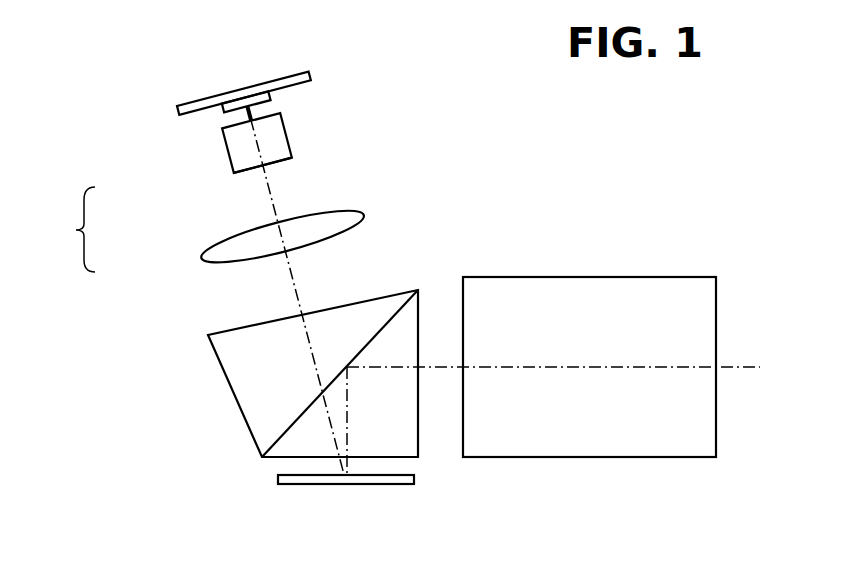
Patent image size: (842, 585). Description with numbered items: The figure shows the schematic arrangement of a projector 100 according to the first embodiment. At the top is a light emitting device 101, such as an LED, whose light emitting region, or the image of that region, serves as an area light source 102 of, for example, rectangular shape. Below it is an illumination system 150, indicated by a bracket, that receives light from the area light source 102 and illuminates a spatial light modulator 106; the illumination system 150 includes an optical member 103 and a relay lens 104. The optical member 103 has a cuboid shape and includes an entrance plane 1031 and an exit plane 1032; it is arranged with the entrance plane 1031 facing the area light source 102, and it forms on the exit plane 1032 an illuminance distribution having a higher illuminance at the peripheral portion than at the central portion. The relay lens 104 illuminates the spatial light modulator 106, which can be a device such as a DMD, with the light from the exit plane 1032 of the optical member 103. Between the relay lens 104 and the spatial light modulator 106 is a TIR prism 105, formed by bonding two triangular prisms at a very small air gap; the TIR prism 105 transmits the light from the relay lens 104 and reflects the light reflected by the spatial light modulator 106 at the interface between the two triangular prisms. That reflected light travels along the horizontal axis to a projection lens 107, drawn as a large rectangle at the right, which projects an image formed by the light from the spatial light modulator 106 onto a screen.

The projector 100 is at (618, 509).
The light emitting device 101 is at (262, 78).
The area light source 102 is at (268, 105).
The optical member 103 is at (195, 167).
The entrance plane 1031 is at (222, 126).
The exit plane 1032 is at (247, 170).
The relay lens 104 is at (202, 259).
The TIR prism 105 is at (232, 397).
The spatial light modulator 106 is at (383, 484).
The projection lens 107 is at (620, 277).
The illumination system 150 is at (65, 229).